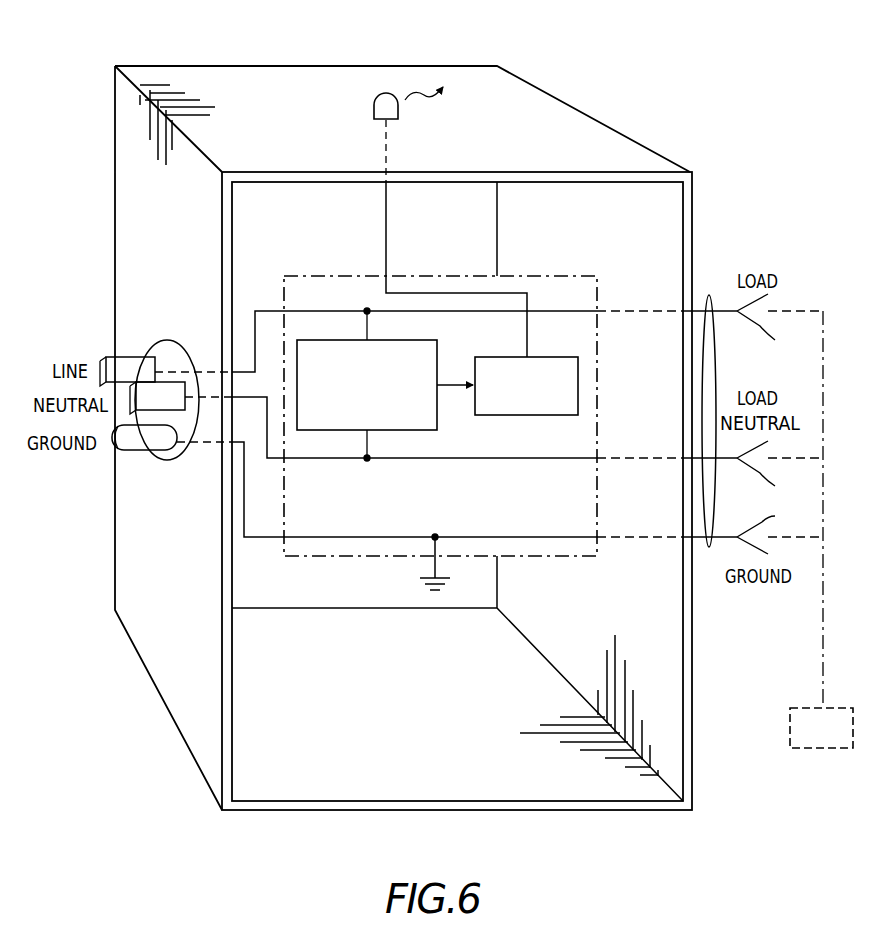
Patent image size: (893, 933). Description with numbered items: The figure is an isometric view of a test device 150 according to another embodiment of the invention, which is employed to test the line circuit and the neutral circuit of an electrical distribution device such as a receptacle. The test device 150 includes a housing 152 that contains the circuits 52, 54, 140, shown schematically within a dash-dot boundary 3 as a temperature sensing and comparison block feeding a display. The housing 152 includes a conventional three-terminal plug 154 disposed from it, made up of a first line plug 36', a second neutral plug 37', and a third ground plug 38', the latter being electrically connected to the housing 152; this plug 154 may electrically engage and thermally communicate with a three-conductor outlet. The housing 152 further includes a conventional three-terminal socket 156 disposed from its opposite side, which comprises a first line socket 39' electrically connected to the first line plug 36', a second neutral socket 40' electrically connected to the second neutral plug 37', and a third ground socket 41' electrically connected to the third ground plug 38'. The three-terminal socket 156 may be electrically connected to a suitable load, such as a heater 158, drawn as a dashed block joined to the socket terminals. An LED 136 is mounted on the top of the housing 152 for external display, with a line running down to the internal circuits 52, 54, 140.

The test device 150 is at (638, 76).
The housing 152 is at (177, 66).
The LED 136 is at (372, 105).
The temperature sensing circuit 3 is at (307, 273).
The three-terminal plug 154 is at (179, 346).
The first line plug 36' is at (116, 352).
The second neutral plug 37' is at (156, 362).
The third ground plug 38' is at (144, 460).
The three-terminal socket 156 is at (705, 300).
The first line socket 39' is at (777, 325).
The second neutral socket 40' is at (776, 472).
The third ground socket 41' is at (776, 529).
The circuit 140 is at (531, 415).
The circuit 52 is at (395, 432).
The circuit 54 is at (367, 445).
The heater 158 is at (805, 708).